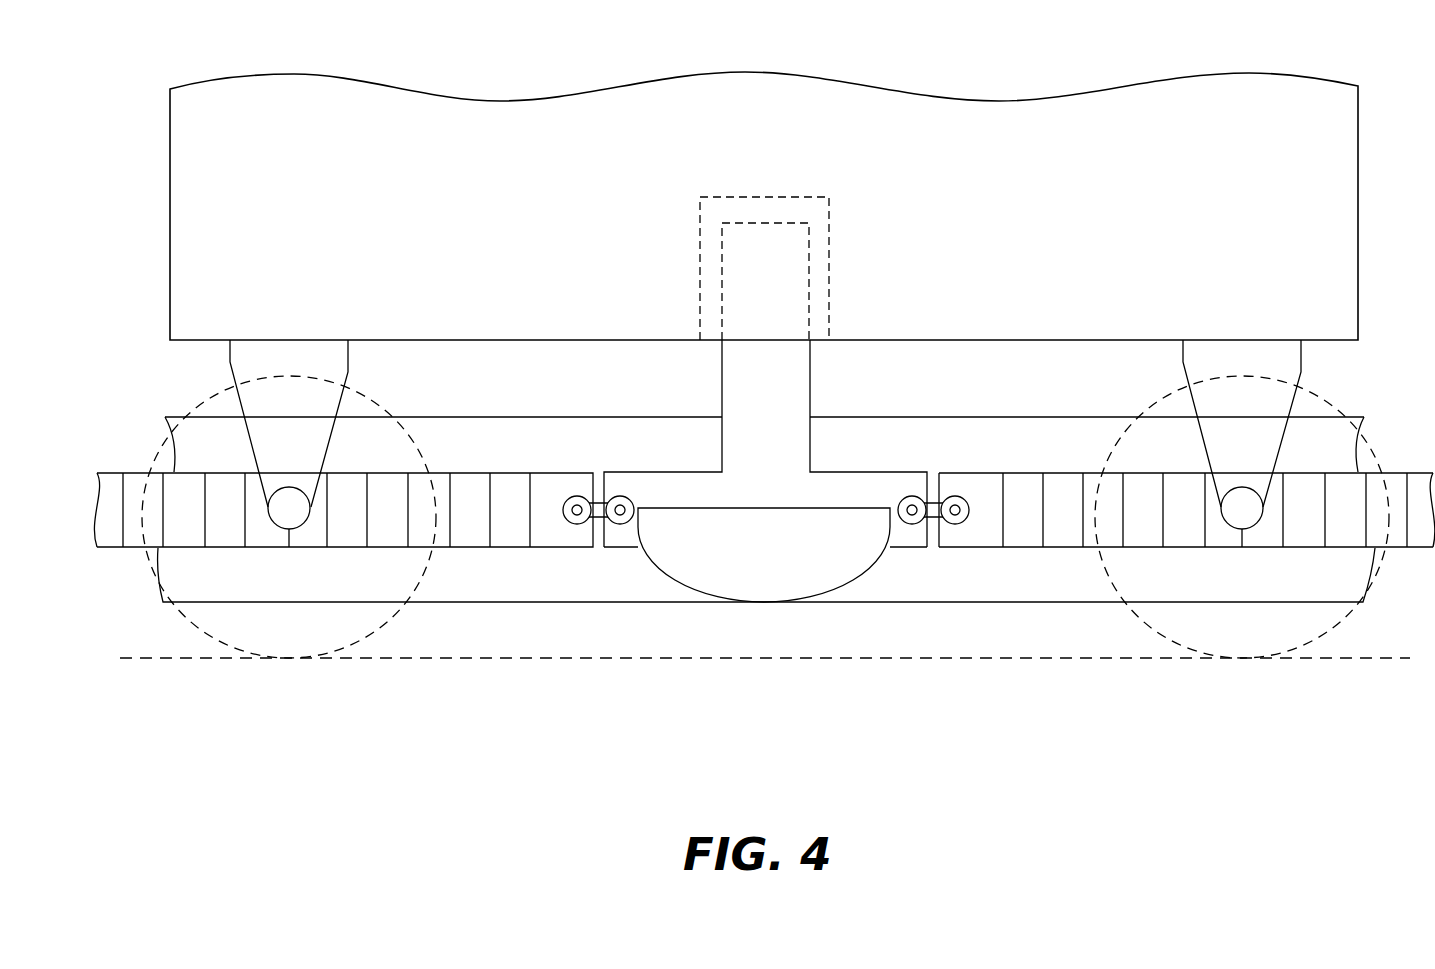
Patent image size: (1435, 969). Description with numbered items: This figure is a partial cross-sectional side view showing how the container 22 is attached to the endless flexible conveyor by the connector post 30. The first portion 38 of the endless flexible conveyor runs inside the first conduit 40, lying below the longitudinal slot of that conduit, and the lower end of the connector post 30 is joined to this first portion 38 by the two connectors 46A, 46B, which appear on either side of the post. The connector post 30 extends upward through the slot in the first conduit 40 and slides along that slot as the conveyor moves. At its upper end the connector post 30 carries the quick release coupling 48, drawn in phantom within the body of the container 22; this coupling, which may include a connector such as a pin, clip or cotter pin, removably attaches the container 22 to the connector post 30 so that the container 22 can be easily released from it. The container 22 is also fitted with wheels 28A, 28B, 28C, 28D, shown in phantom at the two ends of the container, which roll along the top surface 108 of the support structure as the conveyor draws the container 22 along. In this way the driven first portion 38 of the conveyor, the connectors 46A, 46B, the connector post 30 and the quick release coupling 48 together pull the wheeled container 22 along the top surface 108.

The container 22 is at (630, 113).
The wheel 28A is at (289, 546).
The wheel 28B is at (298, 642).
The wheel 28C is at (1242, 546).
The wheel 28D is at (1253, 640).
The connector post 30 is at (742, 367).
The first portion of the endless flexible conveyor 38 is at (1024, 532).
The first conduit 40 is at (212, 585).
The connector 46A is at (578, 522).
The connector 46B is at (954, 522).
The quick release coupling 48 is at (741, 265).
The top surface 108 is at (660, 652).